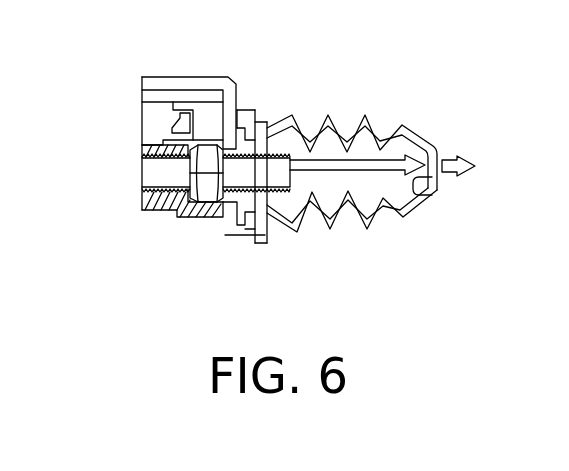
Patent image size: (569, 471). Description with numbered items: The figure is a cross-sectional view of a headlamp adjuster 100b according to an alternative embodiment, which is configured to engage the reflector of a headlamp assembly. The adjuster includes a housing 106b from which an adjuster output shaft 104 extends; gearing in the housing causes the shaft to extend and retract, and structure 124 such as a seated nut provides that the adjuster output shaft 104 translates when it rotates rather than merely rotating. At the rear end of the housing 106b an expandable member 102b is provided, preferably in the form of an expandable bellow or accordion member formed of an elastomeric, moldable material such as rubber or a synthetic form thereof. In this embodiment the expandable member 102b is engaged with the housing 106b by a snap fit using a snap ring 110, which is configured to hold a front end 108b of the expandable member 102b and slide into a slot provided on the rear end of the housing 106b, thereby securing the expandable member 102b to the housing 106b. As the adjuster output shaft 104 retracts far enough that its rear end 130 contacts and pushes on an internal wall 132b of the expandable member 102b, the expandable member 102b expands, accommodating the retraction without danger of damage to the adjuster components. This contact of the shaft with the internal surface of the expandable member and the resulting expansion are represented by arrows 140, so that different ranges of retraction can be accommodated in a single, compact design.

The headlamp adjuster 100b is at (268, 72).
The expandable member 102b is at (387, 118).
The adjuster output shaft 104 is at (279, 200).
The housing 106b is at (208, 224).
The front end of the expandable member 108b is at (244, 108).
The snap ring 110 is at (263, 102).
The seated nut 124 is at (209, 192).
The rear end of the adjuster output shaft 130 is at (378, 204).
The internal wall of the expandable member 132b is at (410, 212).
The arrows 140 is at (383, 166).